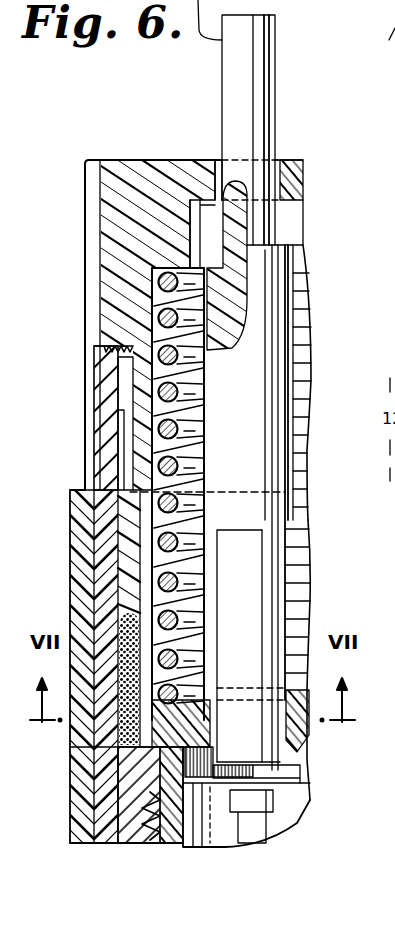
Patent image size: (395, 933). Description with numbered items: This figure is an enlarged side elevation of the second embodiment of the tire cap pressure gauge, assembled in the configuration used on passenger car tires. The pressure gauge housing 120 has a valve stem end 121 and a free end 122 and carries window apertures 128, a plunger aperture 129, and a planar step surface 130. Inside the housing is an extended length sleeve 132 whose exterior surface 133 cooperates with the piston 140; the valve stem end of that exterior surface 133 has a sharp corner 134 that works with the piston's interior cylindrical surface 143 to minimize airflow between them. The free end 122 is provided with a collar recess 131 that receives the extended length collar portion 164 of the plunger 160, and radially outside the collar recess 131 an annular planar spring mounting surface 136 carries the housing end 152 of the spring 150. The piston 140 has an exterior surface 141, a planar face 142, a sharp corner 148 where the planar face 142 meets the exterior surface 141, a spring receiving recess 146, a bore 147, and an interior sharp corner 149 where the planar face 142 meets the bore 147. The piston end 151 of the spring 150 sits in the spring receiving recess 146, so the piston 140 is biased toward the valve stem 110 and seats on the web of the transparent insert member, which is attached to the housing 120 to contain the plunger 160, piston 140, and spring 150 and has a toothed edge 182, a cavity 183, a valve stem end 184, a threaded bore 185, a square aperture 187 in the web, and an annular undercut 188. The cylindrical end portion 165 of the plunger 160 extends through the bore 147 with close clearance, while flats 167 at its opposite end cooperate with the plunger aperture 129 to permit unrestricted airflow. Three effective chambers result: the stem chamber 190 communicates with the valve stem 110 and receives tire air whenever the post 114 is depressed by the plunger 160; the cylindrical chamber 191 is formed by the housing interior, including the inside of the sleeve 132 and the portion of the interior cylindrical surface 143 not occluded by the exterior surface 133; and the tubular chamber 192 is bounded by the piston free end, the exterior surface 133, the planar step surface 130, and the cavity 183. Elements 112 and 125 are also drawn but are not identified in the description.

The valve stem 110 is at (196, 848).
The base plate 112 is at (137, 835).
The post 114 is at (256, 815).
The housing 120 is at (112, 168).
The valve stem end 121 is at (96, 838).
The free end 122 is at (148, 160).
The lower housing portion 125 is at (72, 492).
The window apertures 128 is at (93, 378).
The plunger aperture 129 is at (197, 155).
The planar step surface 130 is at (95, 346).
The collar recess 131 is at (293, 215).
The sleeve extension 132 is at (200, 455).
The exterior surface 133 is at (93, 411).
The sharp corner 134 is at (76, 520).
The spring mounting surface 136 is at (100, 240).
The piston 140 is at (118, 625).
The exterior surface 141 is at (80, 563).
The planar face 142 is at (110, 793).
The interior cylindrical surface 143 is at (205, 568).
The spring receiving recess 146 is at (207, 648).
The bore 147 is at (293, 733).
The sharp corner 148 is at (105, 746).
The interior sharp corner 149 is at (288, 768).
The spring 150 is at (335, 455).
The piston end 151 is at (200, 680).
The housing end 152 is at (100, 236).
The plunger 160 is at (265, 292).
The extended length collar portion 164 is at (266, 398).
The cylindrical end portion 165 is at (287, 603).
The flats 167 is at (276, 55).
The toothed edge 182 is at (115, 313).
The cavity 183 is at (215, 610).
The valve stem end 184 is at (118, 832).
The threaded bore 185 is at (163, 815).
The square aperture 187 is at (205, 760).
The annular undercut 188 is at (107, 758).
The stem chamber 190 is at (284, 772).
The cylindrical chamber 191 is at (180, 524).
The tubular chamber 192 is at (205, 372).